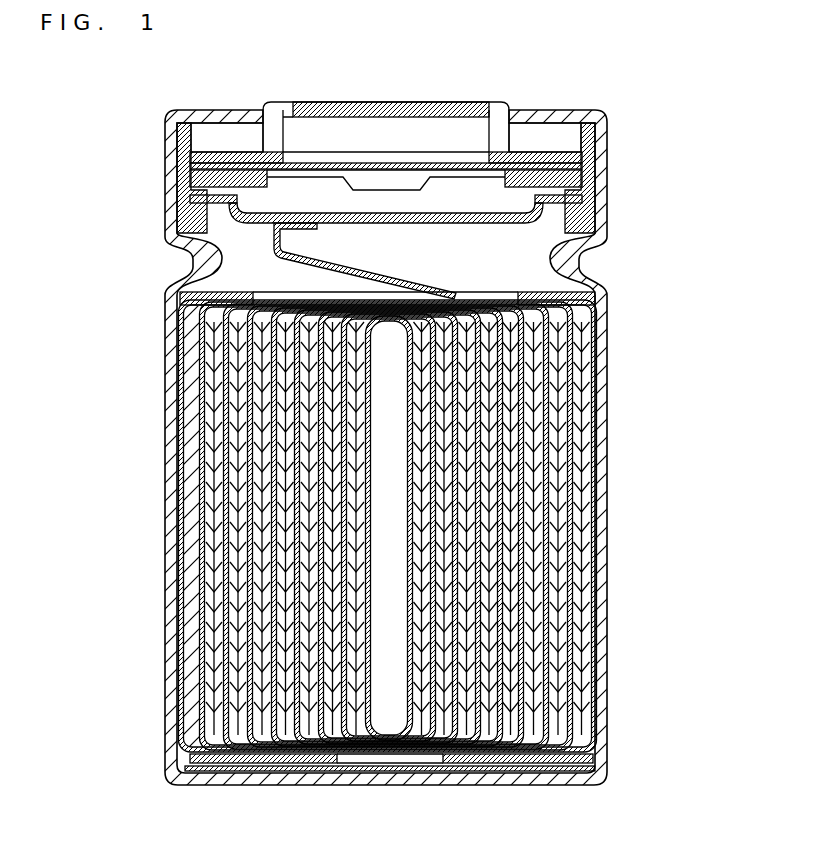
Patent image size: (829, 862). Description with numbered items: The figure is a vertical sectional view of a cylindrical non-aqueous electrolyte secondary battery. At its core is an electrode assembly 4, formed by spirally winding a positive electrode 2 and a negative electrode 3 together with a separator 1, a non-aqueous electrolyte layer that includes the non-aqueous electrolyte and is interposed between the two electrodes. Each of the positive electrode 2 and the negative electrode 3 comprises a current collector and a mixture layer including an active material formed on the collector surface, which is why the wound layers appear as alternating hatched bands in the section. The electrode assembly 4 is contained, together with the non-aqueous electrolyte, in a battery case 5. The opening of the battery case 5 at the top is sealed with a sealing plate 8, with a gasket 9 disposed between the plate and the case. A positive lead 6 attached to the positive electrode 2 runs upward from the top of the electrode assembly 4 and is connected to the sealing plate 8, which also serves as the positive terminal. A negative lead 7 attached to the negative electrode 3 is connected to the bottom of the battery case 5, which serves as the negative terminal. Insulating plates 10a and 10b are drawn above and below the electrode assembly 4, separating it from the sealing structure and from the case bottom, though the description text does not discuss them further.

The separator 1 is at (576, 456).
The positive electrode 2 is at (577, 505).
The negative electrode 3 is at (556, 553).
The electrode assembly 4 is at (487, 526).
The battery case 5 is at (172, 433).
The positive lead 6 is at (400, 278).
The negative lead 7 is at (412, 787).
The sealing plate 8 is at (317, 100).
The gasket 9 is at (590, 162).
The upper insulating plate 10a is at (597, 298).
The lower insulating plate 10b is at (594, 757).